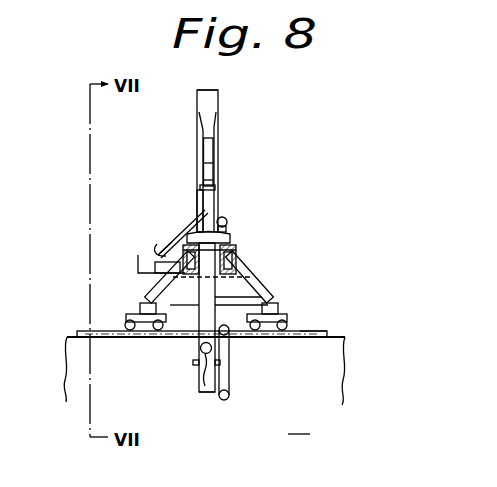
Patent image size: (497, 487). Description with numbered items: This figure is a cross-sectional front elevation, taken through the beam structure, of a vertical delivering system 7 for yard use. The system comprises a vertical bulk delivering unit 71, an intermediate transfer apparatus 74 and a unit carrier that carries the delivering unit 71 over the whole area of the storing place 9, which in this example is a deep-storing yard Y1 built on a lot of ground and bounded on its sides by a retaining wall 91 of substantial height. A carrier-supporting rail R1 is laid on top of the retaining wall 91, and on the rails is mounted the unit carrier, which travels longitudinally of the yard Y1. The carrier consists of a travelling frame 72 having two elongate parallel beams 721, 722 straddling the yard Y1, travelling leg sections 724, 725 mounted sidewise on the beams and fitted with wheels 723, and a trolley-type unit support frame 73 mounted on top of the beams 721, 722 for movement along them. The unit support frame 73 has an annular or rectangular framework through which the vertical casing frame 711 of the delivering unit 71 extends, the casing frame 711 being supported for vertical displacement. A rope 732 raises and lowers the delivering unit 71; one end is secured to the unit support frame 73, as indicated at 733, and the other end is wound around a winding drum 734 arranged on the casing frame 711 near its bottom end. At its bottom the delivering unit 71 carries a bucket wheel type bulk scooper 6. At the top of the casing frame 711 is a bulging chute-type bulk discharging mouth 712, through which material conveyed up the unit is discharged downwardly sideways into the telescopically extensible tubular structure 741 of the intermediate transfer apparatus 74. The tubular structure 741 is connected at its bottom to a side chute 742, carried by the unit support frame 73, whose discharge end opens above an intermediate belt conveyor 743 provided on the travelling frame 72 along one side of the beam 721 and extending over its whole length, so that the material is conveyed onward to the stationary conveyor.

The vertical delivering system 7 is at (278, 130).
The vertical bulk delivering unit 71 is at (225, 148).
The bulk discharging mouth 712 is at (198, 132).
The tubular structure 741 is at (197, 177).
The intermediate transfer apparatus 74 is at (190, 188).
The unit support frame 73 is at (229, 221).
The side chute 742 is at (180, 242).
The rope securing point 733 is at (162, 252).
The intermediate belt conveyor 743 is at (142, 246).
The travelling leg section 724 is at (140, 273).
The beam 722 is at (250, 262).
The travelling frame 72 is at (256, 246).
The vertical casing frame 711 is at (248, 286).
The travelling leg section 725 is at (280, 300).
The beam 721 is at (196, 322).
The rope 732 is at (201, 351).
The winding drum 734 is at (207, 393).
The bucket wheel type bulk scooper 6 is at (235, 384).
The storing place 9 is at (85, 306).
The retaining wall 91 is at (99, 343).
The wheels 723 is at (297, 338).
The carrier-supporting rail R1 is at (320, 331).
The deep-storing yard Y1 is at (299, 425).